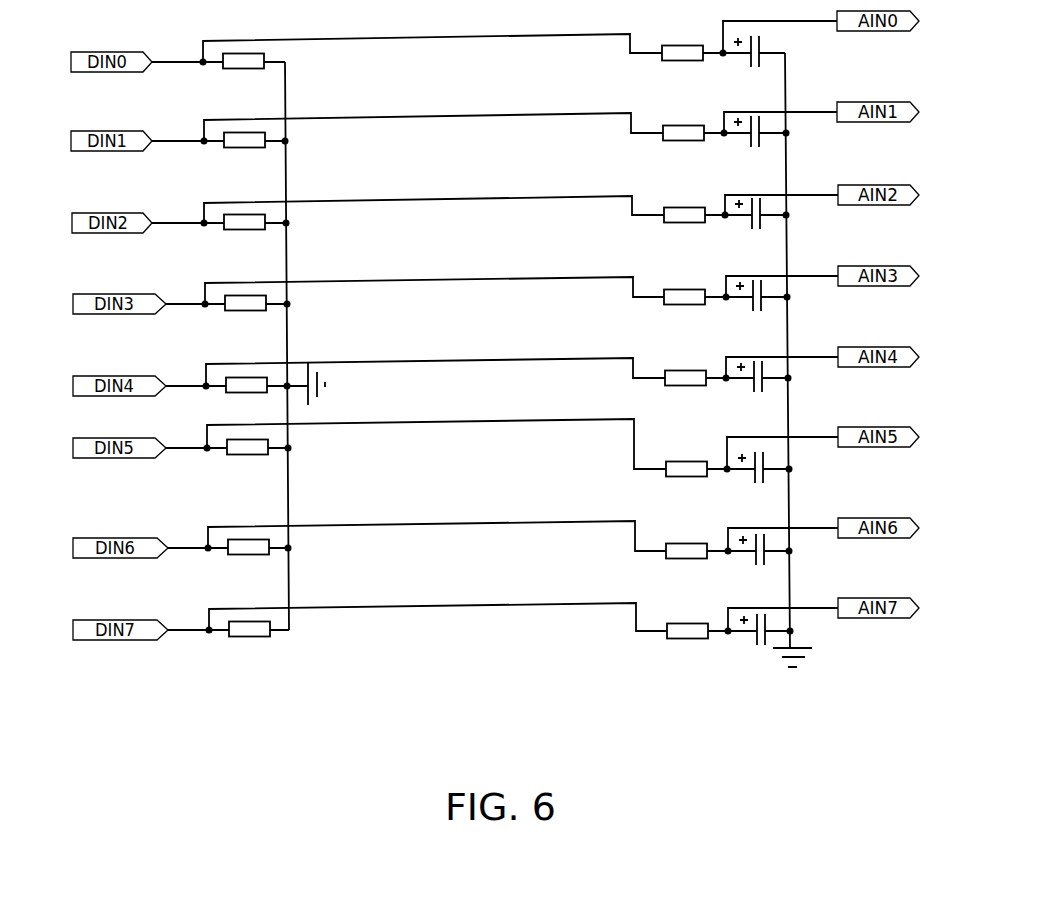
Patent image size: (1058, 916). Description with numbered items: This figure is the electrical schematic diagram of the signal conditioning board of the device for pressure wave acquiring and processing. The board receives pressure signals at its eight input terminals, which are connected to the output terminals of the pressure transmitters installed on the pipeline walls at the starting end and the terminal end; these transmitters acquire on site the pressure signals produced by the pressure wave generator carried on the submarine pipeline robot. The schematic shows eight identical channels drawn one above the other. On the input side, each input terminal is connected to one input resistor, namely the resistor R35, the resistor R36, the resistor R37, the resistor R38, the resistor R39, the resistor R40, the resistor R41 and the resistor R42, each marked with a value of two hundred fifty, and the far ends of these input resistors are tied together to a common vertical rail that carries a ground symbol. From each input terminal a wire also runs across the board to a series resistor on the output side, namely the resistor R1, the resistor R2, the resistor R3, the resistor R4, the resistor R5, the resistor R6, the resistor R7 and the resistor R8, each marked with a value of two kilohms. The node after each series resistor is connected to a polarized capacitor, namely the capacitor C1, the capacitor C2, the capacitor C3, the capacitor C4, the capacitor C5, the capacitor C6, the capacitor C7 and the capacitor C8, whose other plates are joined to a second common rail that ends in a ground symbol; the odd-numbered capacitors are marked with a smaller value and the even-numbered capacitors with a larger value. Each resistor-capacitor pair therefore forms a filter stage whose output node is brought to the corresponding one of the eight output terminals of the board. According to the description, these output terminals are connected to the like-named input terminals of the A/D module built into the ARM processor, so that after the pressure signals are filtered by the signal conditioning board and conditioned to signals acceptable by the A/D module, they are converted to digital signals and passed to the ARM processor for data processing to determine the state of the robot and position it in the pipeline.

The input resistor 250 ohm R35 is at (243, 60).
The input resistor 250 ohm R36 is at (244, 139).
The input resistor 250 ohm R37 is at (244, 221).
The input resistor 250 ohm R38 is at (245, 302).
The input resistor 250 ohm R39 is at (246, 384).
The input resistor 250 ohm R40 is at (247, 446).
The input resistor 250 ohm R41 is at (248, 546).
The input resistor 250 ohm R42 is at (249, 628).
The filter resistor 2K R1 is at (682, 53).
The filter resistor 2K R2 is at (683, 133).
The filter resistor 2K R3 is at (684, 215).
The filter resistor 2K R4 is at (684, 297).
The filter resistor 2K R5 is at (685, 378).
The filter resistor 2K R6 is at (686, 469).
The filter resistor 2K R7 is at (686, 551).
The filter resistor 2K R8 is at (687, 631).
The filter capacitor 0.47uF C1 is at (759, 52).
The filter capacitor 4.7uF C2 is at (754, 132).
The filter capacitor 0.47uF C3 is at (760, 214).
The filter capacitor 4.7uF C4 is at (756, 296).
The filter capacitor 0.47uF C5 is at (762, 377).
The filter capacitor 4.7uF C6 is at (758, 468).
The filter capacitor 0.47uF C7 is at (764, 550).
The filter capacitor 4.7uF C8 is at (760, 630).